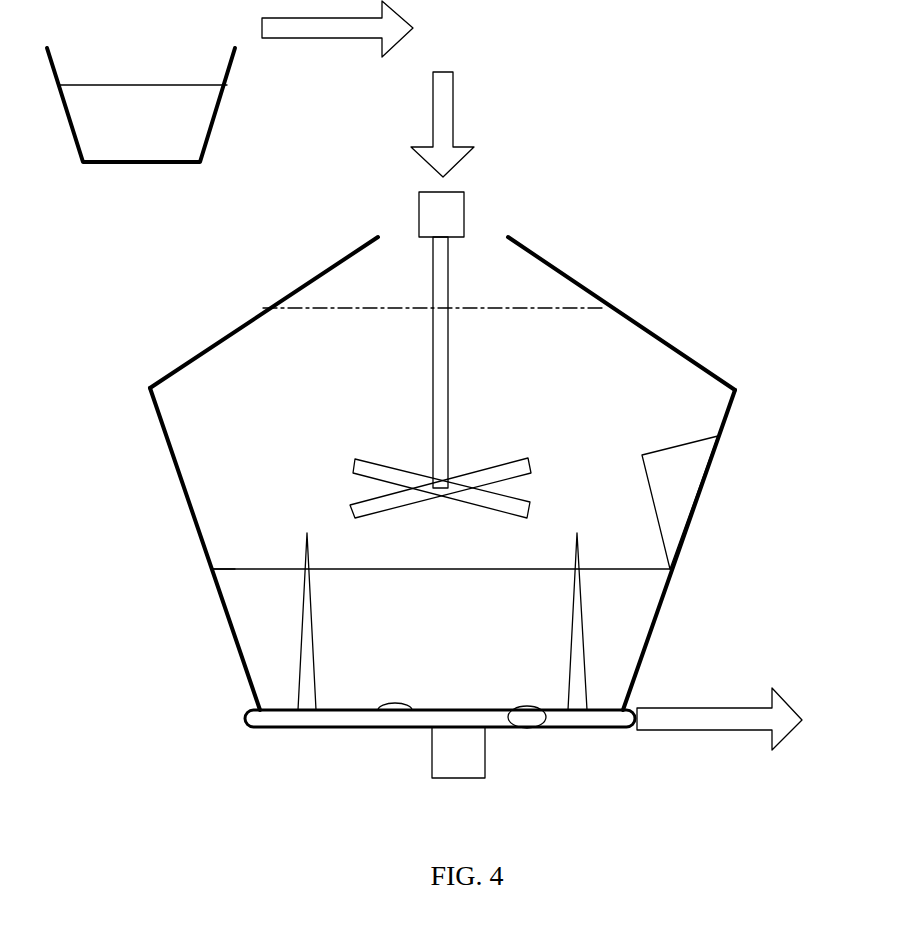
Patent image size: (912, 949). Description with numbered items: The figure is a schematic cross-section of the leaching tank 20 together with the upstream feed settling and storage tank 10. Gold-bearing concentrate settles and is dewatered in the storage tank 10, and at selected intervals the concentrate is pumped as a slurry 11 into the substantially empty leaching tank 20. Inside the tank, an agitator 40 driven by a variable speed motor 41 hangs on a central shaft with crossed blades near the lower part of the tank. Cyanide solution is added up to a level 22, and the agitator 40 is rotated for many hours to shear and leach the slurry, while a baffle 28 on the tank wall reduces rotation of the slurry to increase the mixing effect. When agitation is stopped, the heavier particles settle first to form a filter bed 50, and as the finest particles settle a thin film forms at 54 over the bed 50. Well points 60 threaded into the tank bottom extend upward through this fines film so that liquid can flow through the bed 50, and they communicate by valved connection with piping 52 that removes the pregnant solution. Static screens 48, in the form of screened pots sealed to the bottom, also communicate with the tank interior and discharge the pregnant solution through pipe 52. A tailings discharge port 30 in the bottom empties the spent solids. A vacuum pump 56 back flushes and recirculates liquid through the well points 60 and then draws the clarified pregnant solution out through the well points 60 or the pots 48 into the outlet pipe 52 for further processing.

The feed settling and storage tank 10 is at (80, 161).
The slurry 11 is at (368, 89).
The variable speed motor 41 is at (441, 214).
The leaching tank 20 is at (178, 475).
The level 22 is at (263, 309).
The agitator 40 is at (465, 430).
The baffle 28 is at (673, 503).
The filter bed 50 is at (230, 578).
The thin film 54 is at (223, 567).
The well points 60 is at (300, 625).
The piping 52 is at (585, 728).
The static screens 48 is at (400, 705).
The tailings discharge port 30 is at (432, 768).
The vacuum pump 56 is at (719, 719).